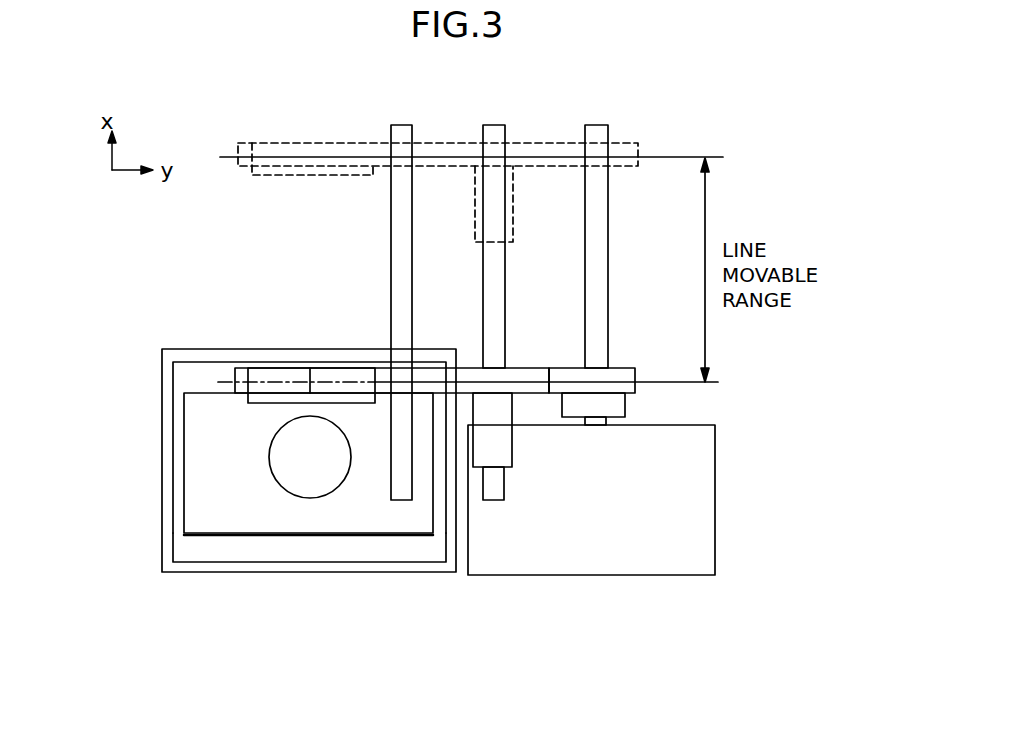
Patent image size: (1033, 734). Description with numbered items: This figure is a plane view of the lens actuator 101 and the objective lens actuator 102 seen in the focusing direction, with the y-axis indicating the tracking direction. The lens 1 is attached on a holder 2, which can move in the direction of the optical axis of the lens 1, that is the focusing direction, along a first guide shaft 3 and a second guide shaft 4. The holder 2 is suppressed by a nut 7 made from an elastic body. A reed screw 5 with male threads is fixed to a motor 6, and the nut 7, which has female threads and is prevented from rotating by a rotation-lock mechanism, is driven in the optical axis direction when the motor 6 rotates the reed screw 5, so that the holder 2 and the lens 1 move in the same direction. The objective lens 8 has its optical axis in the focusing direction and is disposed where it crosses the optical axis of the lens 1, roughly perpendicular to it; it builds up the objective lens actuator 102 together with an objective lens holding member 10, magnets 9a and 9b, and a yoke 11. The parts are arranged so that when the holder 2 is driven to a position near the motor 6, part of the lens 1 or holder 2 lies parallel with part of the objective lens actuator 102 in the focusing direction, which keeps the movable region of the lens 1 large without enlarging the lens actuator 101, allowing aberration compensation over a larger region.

The lens 1 is at (287, 392).
The holder 2 is at (347, 373).
The first guide shaft 3 is at (492, 300).
The second guide shaft 4 is at (398, 273).
The reed screw 5 is at (597, 255).
The motor 6 is at (615, 547).
The nut 7 is at (617, 403).
The objective lens 8 is at (307, 488).
The magnet 9a is at (402, 550).
The magnet 9b is at (192, 370).
The objective lens holding member 10 is at (350, 515).
The yoke 11 is at (195, 568).
The lens actuator 101 is at (713, 408).
The objective lens actuator 102 is at (268, 432).